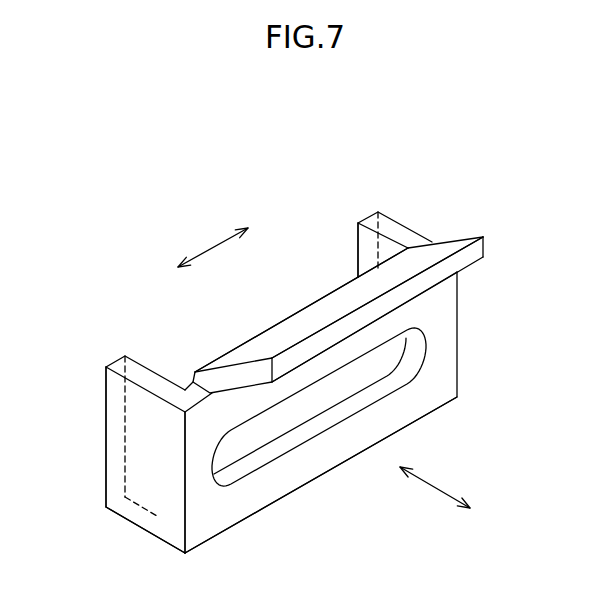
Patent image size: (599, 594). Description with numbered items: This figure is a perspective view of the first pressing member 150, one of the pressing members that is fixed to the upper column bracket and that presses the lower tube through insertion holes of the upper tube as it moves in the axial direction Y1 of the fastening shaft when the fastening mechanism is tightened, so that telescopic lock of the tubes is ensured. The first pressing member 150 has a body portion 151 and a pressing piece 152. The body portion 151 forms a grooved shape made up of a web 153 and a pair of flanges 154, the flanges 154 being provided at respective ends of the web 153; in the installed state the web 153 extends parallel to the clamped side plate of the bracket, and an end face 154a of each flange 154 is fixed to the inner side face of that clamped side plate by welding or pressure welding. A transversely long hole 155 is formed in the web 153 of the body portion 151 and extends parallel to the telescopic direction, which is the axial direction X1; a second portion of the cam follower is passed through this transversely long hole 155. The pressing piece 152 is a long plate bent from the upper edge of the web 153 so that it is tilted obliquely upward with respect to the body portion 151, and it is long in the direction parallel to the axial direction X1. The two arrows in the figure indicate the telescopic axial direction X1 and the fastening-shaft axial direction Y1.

The first pressing member 150 is at (470, 330).
The body portion 151 is at (270, 478).
The pressing piece 152 is at (282, 337).
The web 153 is at (215, 512).
The flanges 154 is at (397, 232).
The end face 154a is at (369, 245).
The transversely long hole 155 is at (315, 398).
The axial direction X1 is at (213, 243).
The axial direction Y1 is at (435, 483).